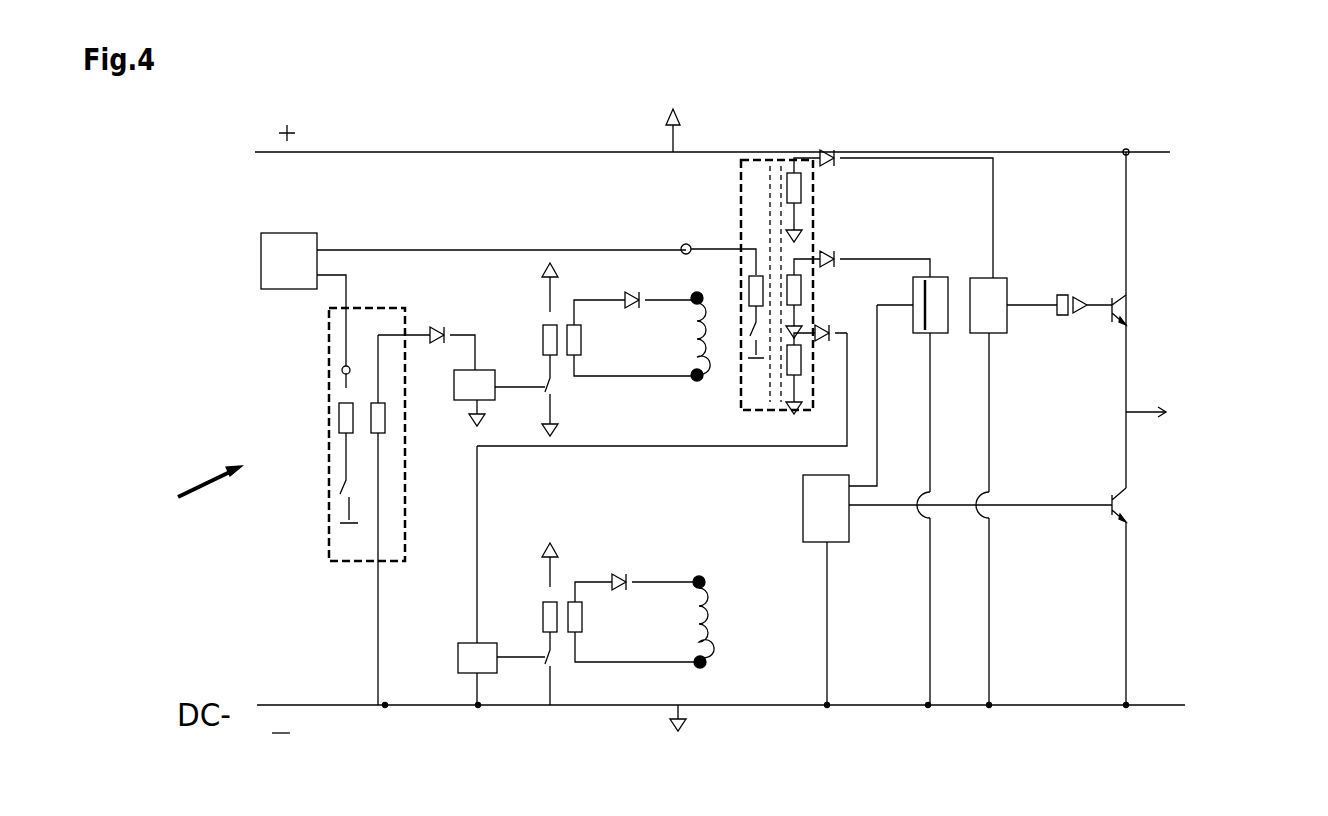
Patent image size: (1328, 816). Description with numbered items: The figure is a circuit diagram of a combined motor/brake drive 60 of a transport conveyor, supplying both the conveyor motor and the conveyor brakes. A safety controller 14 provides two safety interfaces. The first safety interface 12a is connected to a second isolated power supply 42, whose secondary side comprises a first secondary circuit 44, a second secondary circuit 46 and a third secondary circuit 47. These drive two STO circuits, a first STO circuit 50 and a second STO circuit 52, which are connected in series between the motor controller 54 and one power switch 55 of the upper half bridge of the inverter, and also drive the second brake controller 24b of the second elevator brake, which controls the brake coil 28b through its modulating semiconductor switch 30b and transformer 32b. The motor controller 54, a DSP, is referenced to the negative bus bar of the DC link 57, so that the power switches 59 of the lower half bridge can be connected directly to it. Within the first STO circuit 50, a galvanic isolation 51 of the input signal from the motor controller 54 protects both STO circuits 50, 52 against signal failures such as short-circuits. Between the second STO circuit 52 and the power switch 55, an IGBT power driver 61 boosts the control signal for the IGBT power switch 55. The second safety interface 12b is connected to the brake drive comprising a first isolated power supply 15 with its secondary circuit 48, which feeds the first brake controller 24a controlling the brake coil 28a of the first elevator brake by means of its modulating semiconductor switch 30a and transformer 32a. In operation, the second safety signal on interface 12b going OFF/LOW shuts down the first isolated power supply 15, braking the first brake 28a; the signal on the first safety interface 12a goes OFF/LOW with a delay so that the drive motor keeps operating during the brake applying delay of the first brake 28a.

The safety controller 14 is at (278, 254).
The first safety interface 12a is at (683, 244).
The second safety interface 12b is at (342, 368).
The first isolated power supply 15 is at (333, 512).
The first brake controller 24a is at (487, 383).
The second brake controller 24b is at (470, 660).
The brake coil of the first conveyor brake 28a is at (690, 340).
The brake coil of the second conveyor brake 28b is at (707, 633).
The modulating semiconductor switch 30a is at (553, 388).
The modulating semiconductor switch 30b is at (548, 648).
The transformer in the brake control circuit 32a is at (560, 303).
The transformer in the brake control circuit 32b is at (556, 650).
The second isolated power supply 42 is at (754, 168).
The first secondary circuit of the second isolated power supply 44 is at (790, 287).
The second secondary circuit of the second isolated power supply 46 is at (797, 183).
The third secondary circuit of the second isolated power supply 47 is at (797, 365).
The secondary circuit of first isolated power supply 48 is at (378, 417).
The first STO circuit 50 is at (940, 300).
The galvanic isolation 51 is at (925, 318).
The second STO circuit 52 is at (990, 300).
The motor controller 54 is at (828, 530).
The power switch of the upper half bridge of the inverter 55 is at (1118, 312).
The DC link 57 is at (456, 141).
The power switch of the lower half bridge of the inverter 59 is at (1125, 500).
The combined motor/brake drive 60 is at (191, 494).
The power driver 61 is at (1085, 295).